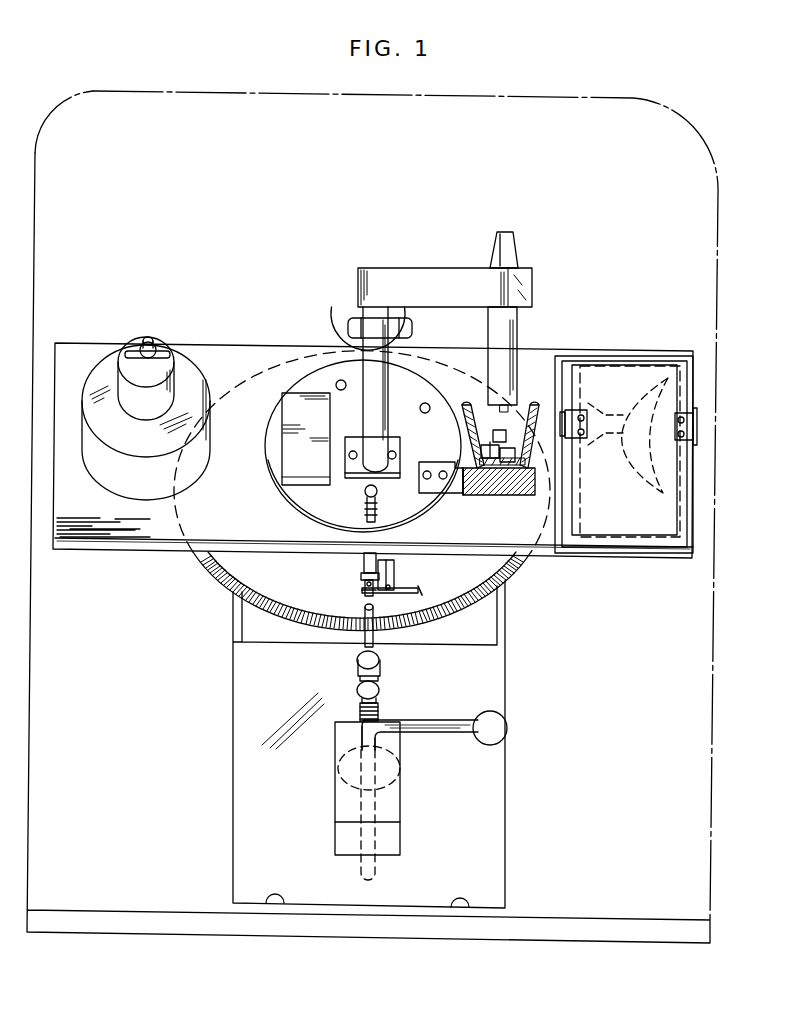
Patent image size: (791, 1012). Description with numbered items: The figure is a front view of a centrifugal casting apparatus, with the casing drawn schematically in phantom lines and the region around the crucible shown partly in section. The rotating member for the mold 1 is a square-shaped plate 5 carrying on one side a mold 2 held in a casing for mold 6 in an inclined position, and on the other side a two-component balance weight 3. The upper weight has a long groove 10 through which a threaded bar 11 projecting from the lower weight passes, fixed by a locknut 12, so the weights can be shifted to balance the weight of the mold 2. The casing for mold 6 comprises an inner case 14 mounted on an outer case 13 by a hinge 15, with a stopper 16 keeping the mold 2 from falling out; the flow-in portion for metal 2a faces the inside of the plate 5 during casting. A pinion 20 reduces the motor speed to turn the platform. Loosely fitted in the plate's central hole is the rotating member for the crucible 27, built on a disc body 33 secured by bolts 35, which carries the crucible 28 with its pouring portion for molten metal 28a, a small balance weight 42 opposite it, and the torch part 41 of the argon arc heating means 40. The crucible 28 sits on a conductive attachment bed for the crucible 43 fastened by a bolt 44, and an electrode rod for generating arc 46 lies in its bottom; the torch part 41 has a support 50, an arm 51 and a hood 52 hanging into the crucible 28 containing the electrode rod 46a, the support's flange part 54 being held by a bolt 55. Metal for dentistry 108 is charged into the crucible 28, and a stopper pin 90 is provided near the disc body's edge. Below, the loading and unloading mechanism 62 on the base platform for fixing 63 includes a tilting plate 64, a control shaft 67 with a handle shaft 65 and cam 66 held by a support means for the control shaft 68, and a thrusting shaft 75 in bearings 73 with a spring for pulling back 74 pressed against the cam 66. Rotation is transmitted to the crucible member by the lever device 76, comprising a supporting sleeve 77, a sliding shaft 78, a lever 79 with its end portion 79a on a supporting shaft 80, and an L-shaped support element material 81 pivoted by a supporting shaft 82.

The rotating member for the mold 1 is at (78, 550).
The mold 2 is at (595, 547).
The flow-in portion for metal 2a is at (588, 407).
The balance weight 3 is at (107, 369).
The square-shaped plate 5 is at (134, 530).
The casing for mold 6 is at (620, 355).
The long groove 10 is at (133, 362).
The threaded bar 11 is at (148, 340).
The locknut 12 is at (163, 352).
The outer case 13 is at (646, 360).
The inner case 14 is at (665, 368).
The hinge 15 is at (695, 425).
The stopper 16 is at (575, 440).
The pinion 20 is at (347, 298).
The rotating member for the crucible 27 is at (303, 371).
The crucible 28 is at (463, 424).
The pouring portion for molten metal 28a is at (529, 412).
The disc body 33 is at (332, 373).
The bolts 35 is at (342, 391).
The heating means 40 is at (541, 272).
The torch part 41 is at (445, 287).
The small balance weight 42 is at (306, 439).
The attachment bed for the crucible 43 is at (462, 497).
The bolt 44 is at (425, 483).
The electrode rod for generating arc 46 is at (496, 496).
The electrode rod 46a is at (486, 410).
The support 50 is at (383, 381).
The arm 51 is at (435, 272).
The hood 52 is at (518, 326).
The flange part of the support 54 is at (362, 439).
The bolt 55 is at (394, 450).
The loading and unloading mechanism 62 is at (358, 516).
The base platform for fixing 63 is at (118, 928).
The tilting plate 64 is at (369, 744).
The handle shaft 65 is at (435, 733).
The cam 66 is at (393, 778).
The control shaft 67 is at (364, 877).
The support means for the control shaft 68 is at (400, 838).
The bearings 73 is at (380, 683).
The spring for pulling back 74 is at (380, 708).
The thrusting shaft 75 is at (373, 642).
The lever device 76 is at (357, 589).
The supporting sleeve 77 is at (363, 562).
The sliding shaft 78 is at (361, 577).
The lever 79 is at (421, 592).
The link end 79a is at (424, 588).
The supporting shaft 80 is at (364, 593).
The L-shaped support element material 81 is at (395, 570).
The supporting shaft 82 is at (376, 596).
The stopper pin 90 is at (365, 495).
The metal for dentistry 108 is at (487, 450).